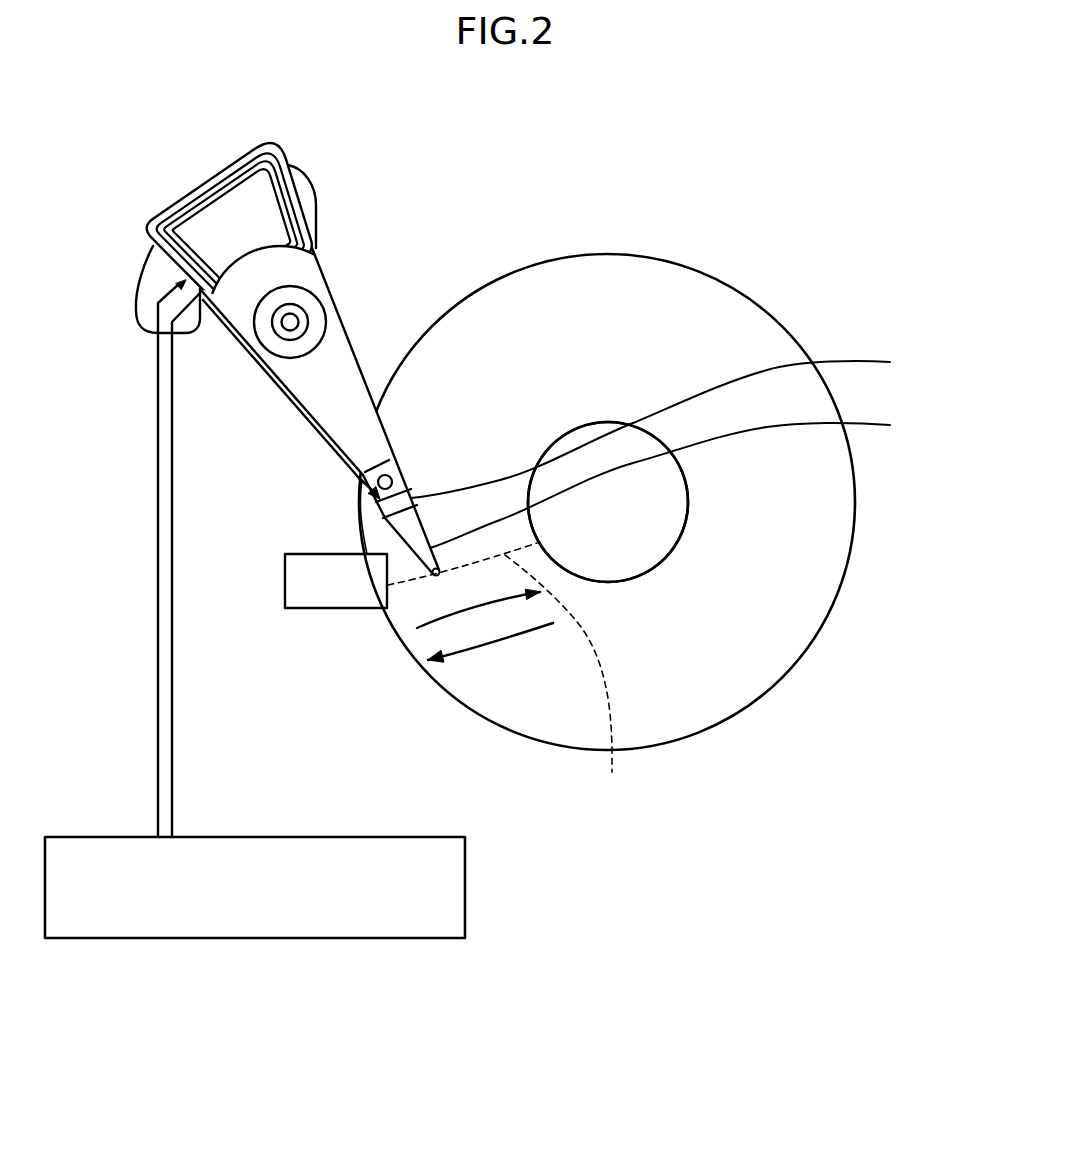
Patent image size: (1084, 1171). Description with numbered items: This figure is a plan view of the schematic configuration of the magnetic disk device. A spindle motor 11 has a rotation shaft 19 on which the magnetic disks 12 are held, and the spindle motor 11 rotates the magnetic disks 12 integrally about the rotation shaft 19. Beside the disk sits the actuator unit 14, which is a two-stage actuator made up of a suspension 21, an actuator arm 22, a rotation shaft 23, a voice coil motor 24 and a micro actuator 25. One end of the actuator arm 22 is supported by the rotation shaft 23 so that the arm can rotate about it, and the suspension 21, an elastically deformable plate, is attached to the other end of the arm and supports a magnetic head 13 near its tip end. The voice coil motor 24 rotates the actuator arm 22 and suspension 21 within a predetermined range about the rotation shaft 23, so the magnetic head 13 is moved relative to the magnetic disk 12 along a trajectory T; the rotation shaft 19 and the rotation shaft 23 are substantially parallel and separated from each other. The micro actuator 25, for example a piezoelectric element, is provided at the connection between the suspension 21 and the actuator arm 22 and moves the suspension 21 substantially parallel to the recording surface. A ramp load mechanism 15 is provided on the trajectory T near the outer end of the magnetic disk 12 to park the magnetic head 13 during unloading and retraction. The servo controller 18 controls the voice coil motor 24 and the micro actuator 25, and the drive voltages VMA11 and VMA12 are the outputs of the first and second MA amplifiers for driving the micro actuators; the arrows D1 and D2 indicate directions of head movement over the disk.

The spindle motor 11 is at (660, 505).
The magnetic disk 12 is at (606, 253).
The magnetic head 13 is at (437, 578).
The actuator unit 14 is at (288, 385).
The ramp load mechanism 15 is at (333, 609).
The servo controller 18 is at (255, 938).
The rotation shaft 19 is at (608, 502).
The suspension 21 is at (674, 480).
The actuator arm 22 is at (335, 382).
The rotation shaft 23 is at (284, 358).
The voice coil motor 24 is at (245, 147).
The micro actuator 25 is at (665, 424).
The first seek direction D1 is at (535, 632).
The second seek direction D2 is at (430, 627).
The trajectory T is at (503, 673).
The voltage output from the first MA amplifier VMA11 is at (173, 721).
The voltage output from the second MA amplifier VMA12 is at (228, 565).